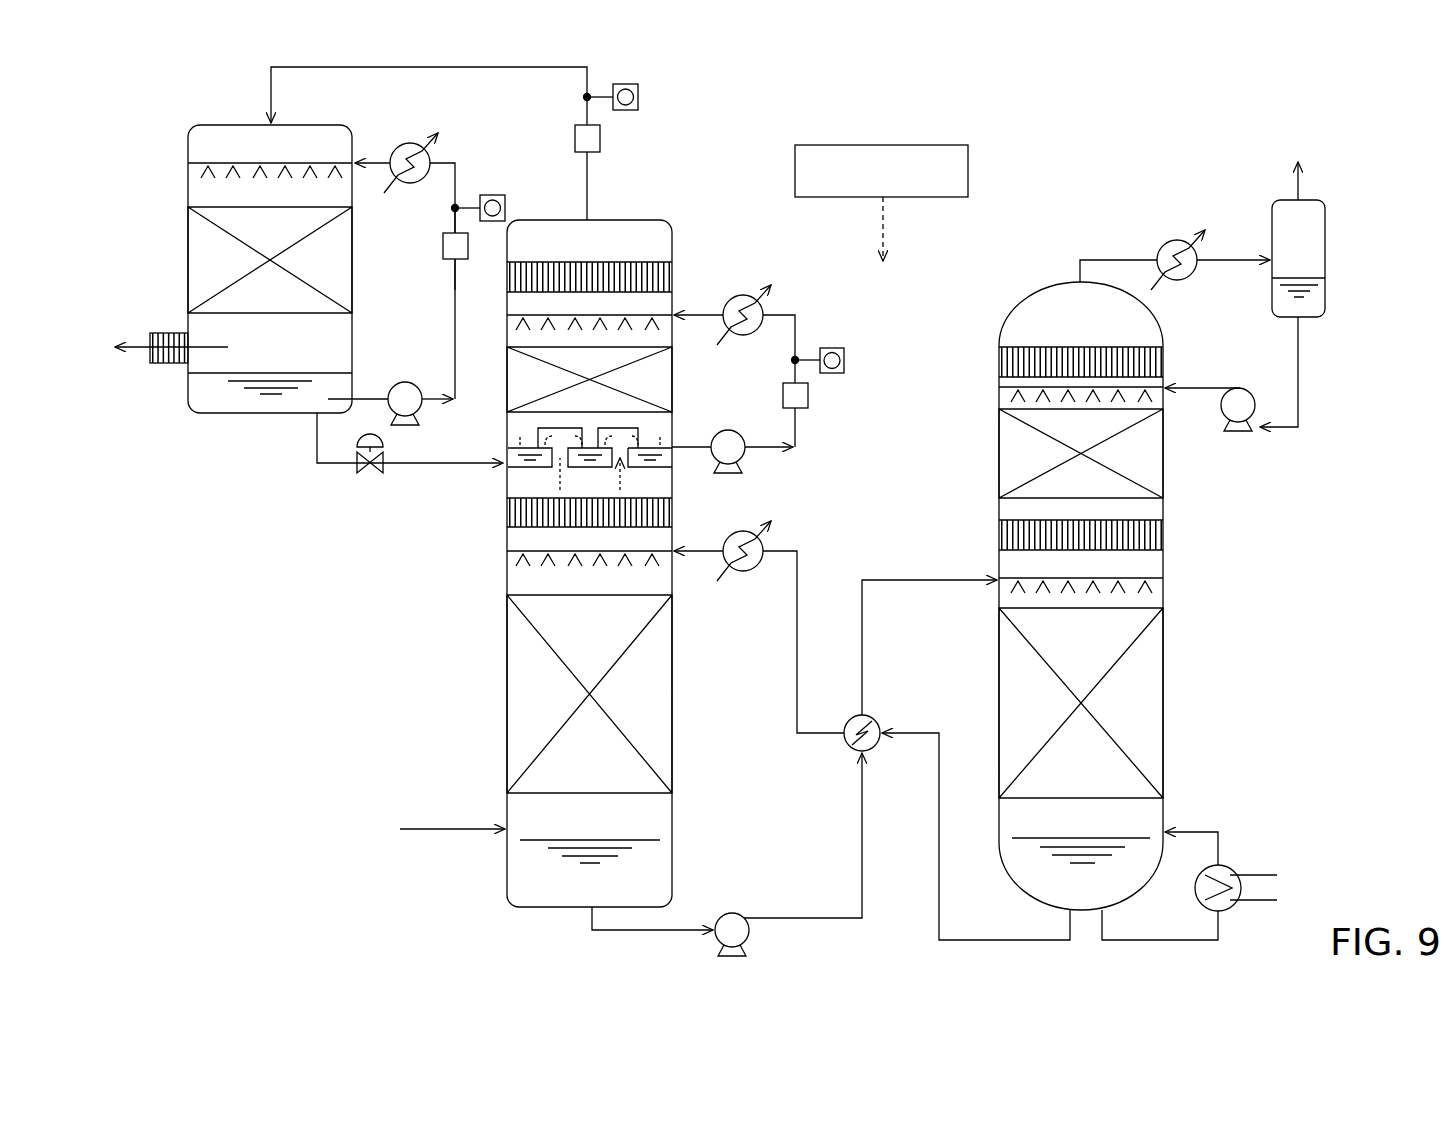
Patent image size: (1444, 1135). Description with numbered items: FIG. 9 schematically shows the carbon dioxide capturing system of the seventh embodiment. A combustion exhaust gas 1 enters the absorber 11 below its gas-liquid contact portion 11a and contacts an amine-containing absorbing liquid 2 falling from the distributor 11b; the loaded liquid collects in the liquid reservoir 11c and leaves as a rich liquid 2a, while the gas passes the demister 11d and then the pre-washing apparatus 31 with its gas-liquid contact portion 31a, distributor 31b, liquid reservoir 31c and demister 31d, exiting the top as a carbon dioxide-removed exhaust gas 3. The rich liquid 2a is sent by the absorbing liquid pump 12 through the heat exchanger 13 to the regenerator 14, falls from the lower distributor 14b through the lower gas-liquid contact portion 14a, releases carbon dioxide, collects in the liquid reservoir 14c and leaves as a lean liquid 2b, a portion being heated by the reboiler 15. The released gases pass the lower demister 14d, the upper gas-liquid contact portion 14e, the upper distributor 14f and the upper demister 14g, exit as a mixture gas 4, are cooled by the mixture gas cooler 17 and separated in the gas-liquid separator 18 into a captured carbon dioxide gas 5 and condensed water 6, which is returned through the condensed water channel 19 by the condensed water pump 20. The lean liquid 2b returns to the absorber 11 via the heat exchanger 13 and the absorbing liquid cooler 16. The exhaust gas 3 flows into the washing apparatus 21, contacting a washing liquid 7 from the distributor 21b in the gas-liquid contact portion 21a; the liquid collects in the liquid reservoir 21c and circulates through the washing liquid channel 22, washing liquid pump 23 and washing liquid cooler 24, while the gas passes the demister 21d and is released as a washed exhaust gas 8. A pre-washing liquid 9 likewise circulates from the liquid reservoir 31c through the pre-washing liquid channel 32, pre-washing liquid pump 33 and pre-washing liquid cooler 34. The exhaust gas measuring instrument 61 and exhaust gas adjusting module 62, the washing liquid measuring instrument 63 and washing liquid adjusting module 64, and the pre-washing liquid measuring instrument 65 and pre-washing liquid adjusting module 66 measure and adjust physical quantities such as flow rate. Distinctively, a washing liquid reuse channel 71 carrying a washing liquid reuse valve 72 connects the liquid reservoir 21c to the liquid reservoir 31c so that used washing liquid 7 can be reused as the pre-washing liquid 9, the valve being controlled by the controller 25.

The combustion exhaust gas 1 is at (452, 828).
The absorbing liquid 2 is at (907, 803).
The rich liquid 2a is at (805, 911).
The lean liquid 2b is at (935, 745).
The CO2-removed exhaust gas 3 is at (585, 187).
The mixture gas 4 is at (1110, 260).
The captured CO2 gas 5 is at (1300, 185).
The condensed water 6 is at (1300, 383).
The washing liquid 7 is at (455, 290).
The washed exhaust gas 8 is at (140, 340).
The pre-washing liquid 9 is at (797, 333).
The absorber 11 is at (505, 638).
The gas-liquid contact portion 11a is at (508, 700).
The distributor 11b is at (515, 555).
The liquid reservoir 11c is at (525, 880).
The demister 11d is at (508, 515).
The absorbing liquid pump 12 is at (730, 913).
The heat exchanger 13 is at (850, 718).
The regenerator 14 is at (1008, 302).
The lower gas-liquid contact portion 14a is at (1165, 722).
The lower distributor 14b is at (1160, 582).
The liquid reservoir 14c is at (1030, 878).
The lower demister 14d is at (1000, 537).
The upper gas-liquid contact portion 14e is at (998, 453).
The upper distributor 14f is at (1010, 395).
The upper demister 14g is at (1000, 360).
The reboiler 15 is at (1237, 865).
The absorbing liquid cooler 16 is at (742, 575).
The mixture gas cooler 17 is at (1178, 240).
The gas-liquid separator 18 is at (1327, 243).
The condensed water channel 19 is at (1260, 430).
The condensed water pump 20 is at (1240, 388).
The washing apparatus 21 is at (225, 122).
The gas-liquid contact portion 21a is at (188, 232).
The distributor 21b is at (200, 165).
The liquid reservoir 21c is at (237, 400).
The demister 21d is at (170, 365).
The washing liquid channel 22 is at (457, 355).
The washing liquid pump 23 is at (405, 382).
The washing liquid cooler 24 is at (398, 143).
The controller 25 is at (970, 168).
The pre-washing apparatus 31 is at (672, 217).
The gas-liquid contact portion 31a is at (665, 390).
The distributor 31b is at (660, 322).
The liquid reservoir 31c is at (508, 447).
The demister 31d is at (628, 262).
The pre-washing liquid channel 32 is at (797, 430).
The pre-washing liquid pump 33 is at (745, 457).
The pre-washing liquid cooler 34 is at (750, 295).
The exhaust gas measuring instrument 61 is at (640, 97).
The exhaust gas adjusting module 62 is at (602, 137).
The washing liquid measuring instrument 63 is at (493, 193).
The washing liquid adjusting module 64 is at (443, 248).
The pre-washing liquid measuring instrument 65 is at (845, 362).
The pre-washing liquid adjusting module 66 is at (810, 397).
The washing liquid reuse channel 71 is at (330, 465).
The washing liquid reuse valve 72 is at (375, 473).